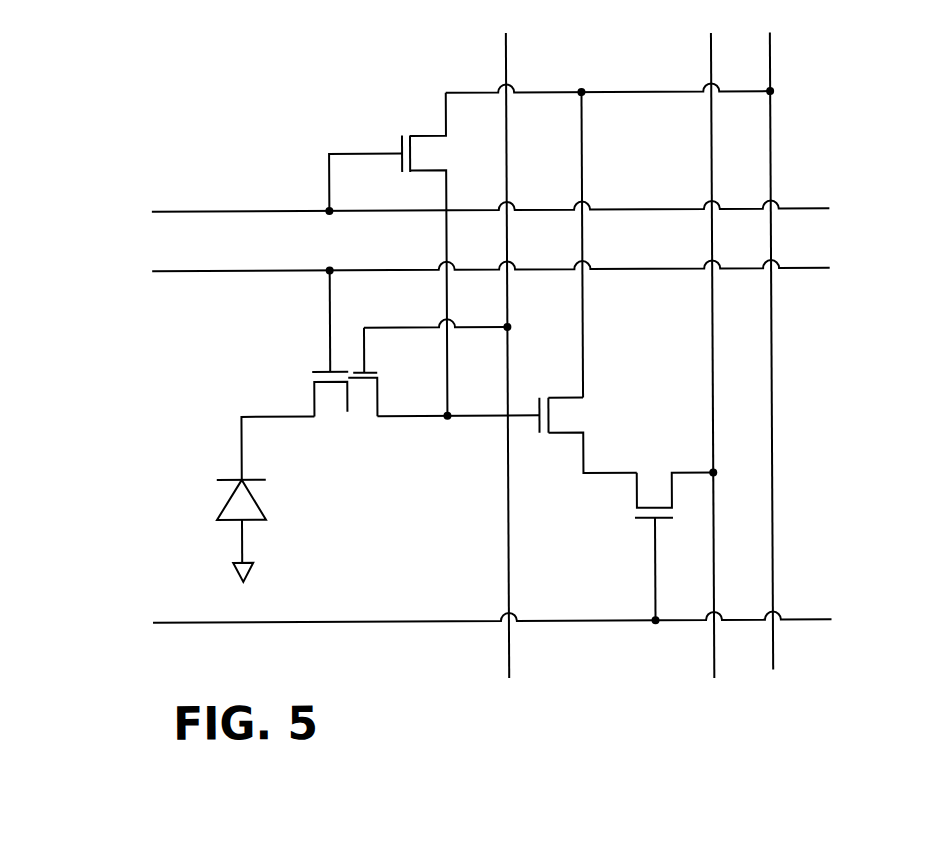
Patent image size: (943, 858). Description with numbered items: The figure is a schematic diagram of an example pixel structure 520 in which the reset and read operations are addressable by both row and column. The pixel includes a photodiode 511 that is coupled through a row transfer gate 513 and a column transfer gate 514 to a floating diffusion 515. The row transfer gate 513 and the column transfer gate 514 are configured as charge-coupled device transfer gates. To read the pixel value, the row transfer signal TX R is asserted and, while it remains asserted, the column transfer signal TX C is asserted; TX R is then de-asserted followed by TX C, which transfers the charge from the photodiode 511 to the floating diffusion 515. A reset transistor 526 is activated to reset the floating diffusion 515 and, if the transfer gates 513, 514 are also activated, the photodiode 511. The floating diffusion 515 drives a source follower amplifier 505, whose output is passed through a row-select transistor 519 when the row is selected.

The pixel structure 520 is at (184, 59).
The reset transistor 526 is at (431, 141).
The row transfer gate 513 is at (318, 401).
The column transfer gate 514 is at (372, 393).
The floating diffusion 515 is at (413, 417).
The source follower amplifier 505 is at (566, 403).
The row-select transistor 519 is at (643, 490).
The photodiode 511 is at (236, 499).